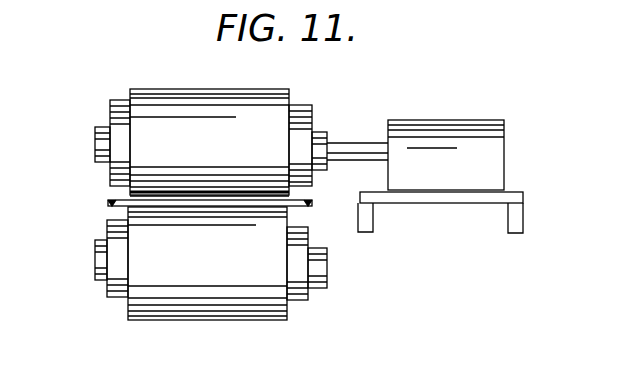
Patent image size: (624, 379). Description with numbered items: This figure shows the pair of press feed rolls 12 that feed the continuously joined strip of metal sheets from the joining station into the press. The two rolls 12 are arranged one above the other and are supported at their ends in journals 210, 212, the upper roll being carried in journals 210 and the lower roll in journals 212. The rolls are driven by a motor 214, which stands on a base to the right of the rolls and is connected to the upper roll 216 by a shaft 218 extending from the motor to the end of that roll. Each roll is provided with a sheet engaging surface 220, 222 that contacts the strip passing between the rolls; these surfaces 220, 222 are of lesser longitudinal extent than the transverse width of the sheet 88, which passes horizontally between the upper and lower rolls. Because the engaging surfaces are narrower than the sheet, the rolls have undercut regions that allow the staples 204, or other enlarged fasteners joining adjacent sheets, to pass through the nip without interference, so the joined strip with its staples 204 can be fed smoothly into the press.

The press feed rolls 12 is at (320, 101).
The sheet 88 is at (108, 203).
The staple 204 is at (112, 200).
The journal 210 is at (97, 126).
The journal 212 is at (95, 283).
The motor 214 is at (441, 118).
The roll 216 is at (201, 90).
The shaft 218 is at (349, 143).
The sheet engaging surface 220 is at (198, 192).
The sheet engaging surface 222 is at (217, 208).